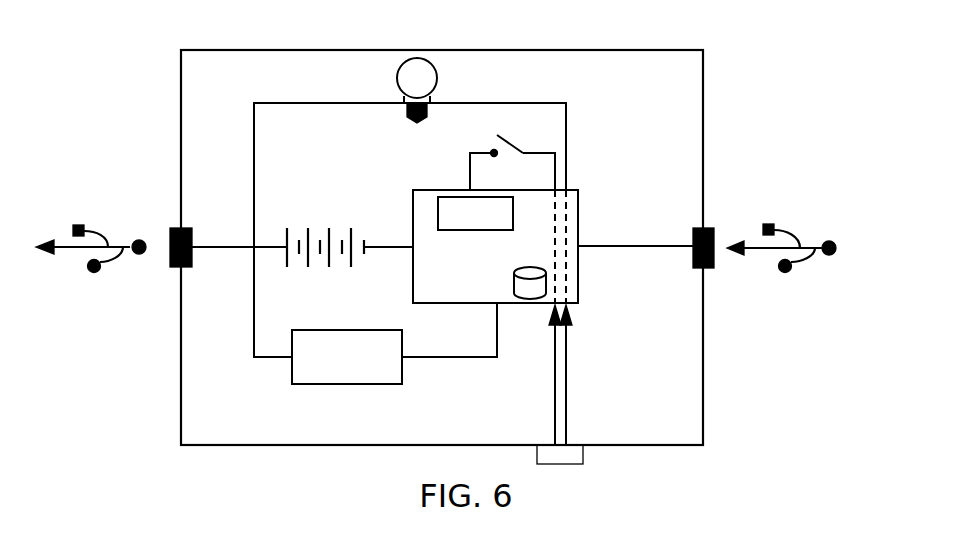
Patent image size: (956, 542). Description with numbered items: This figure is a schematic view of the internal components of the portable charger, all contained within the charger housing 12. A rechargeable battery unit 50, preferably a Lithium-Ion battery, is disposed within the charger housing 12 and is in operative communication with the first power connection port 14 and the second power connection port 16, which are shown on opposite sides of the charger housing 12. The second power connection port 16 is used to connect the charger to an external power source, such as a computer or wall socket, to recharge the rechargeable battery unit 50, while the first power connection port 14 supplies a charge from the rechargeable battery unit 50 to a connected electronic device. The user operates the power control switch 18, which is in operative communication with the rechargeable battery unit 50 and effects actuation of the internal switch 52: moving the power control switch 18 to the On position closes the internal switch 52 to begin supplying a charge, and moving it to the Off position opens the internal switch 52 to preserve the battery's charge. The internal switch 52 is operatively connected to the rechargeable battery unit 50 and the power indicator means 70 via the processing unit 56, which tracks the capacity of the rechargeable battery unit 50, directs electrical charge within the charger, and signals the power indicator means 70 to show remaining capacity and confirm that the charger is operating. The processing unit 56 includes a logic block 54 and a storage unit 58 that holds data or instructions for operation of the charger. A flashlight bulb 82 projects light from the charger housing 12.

The charger housing 12 is at (611, 50).
The first power connection port 14 is at (170, 256).
The second power connection port 16 is at (710, 268).
The power control switch 18 is at (567, 455).
The rechargeable battery unit 50 is at (327, 206).
The internal switch 52 is at (516, 145).
The logic 54 is at (452, 192).
The processing unit 56 is at (578, 229).
The storage unit 58 is at (515, 285).
The power indicator means 70 is at (355, 330).
The flashlight bulb 82 is at (437, 72).